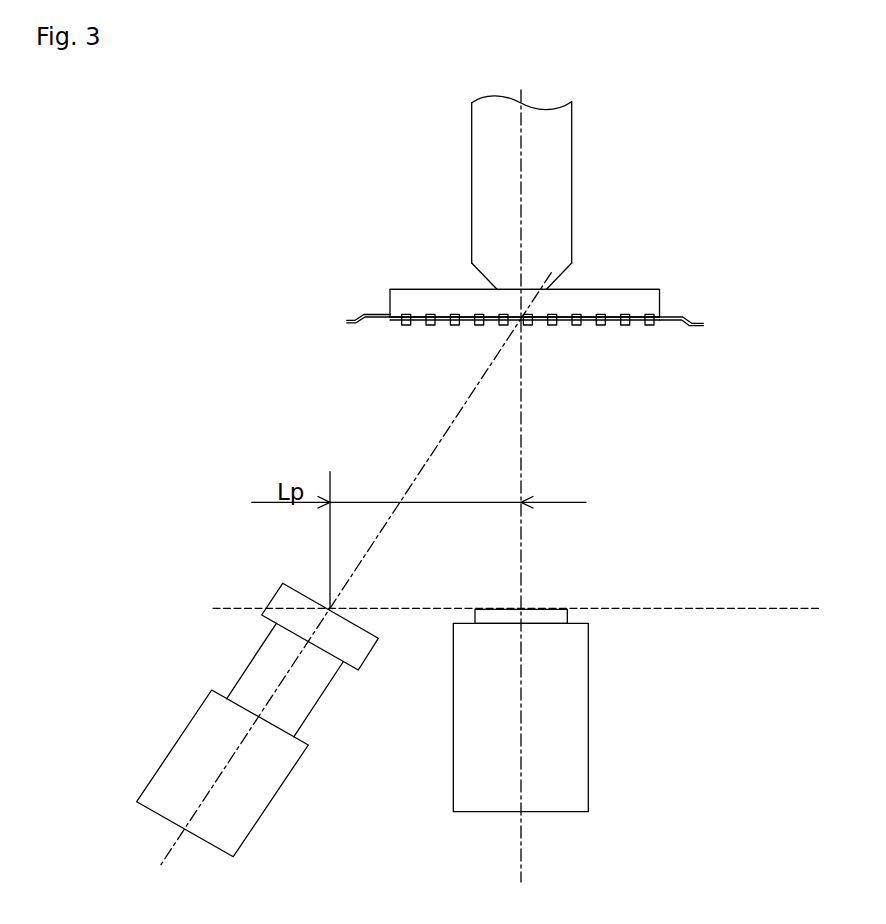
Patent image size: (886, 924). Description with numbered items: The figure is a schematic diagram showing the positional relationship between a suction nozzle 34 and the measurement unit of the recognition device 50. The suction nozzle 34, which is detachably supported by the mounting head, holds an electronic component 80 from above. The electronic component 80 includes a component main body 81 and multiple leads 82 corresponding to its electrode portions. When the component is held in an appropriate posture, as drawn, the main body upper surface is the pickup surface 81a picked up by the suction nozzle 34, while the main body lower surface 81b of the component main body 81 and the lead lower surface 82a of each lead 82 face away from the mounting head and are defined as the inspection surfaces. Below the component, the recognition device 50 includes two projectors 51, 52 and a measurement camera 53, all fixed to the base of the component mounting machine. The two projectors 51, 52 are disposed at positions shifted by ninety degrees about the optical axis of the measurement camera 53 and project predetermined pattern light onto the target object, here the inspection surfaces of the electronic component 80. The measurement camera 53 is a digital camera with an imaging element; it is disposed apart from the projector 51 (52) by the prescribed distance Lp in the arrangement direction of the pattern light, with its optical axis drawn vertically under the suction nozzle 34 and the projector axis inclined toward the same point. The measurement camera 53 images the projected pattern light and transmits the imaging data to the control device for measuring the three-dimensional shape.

The suction nozzle 34 is at (572, 138).
The recognition device 50 is at (416, 719).
The projector 51 is at (258, 719).
The projector 52 is at (283, 783).
The measurement camera 53 is at (588, 728).
The electronic component 80 is at (532, 299).
The component main body 81 is at (552, 305).
The pickup surface 81a is at (613, 289).
The main body lower surface 81b is at (657, 323).
The lead 82 is at (506, 326).
The lead lower surface 82a is at (625, 328).